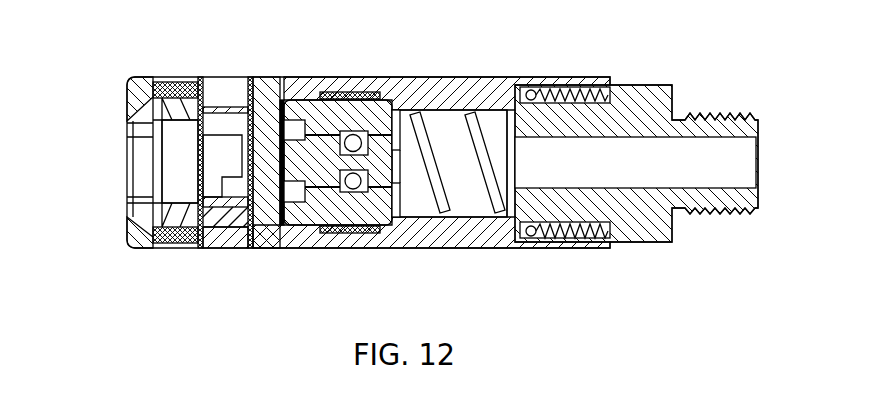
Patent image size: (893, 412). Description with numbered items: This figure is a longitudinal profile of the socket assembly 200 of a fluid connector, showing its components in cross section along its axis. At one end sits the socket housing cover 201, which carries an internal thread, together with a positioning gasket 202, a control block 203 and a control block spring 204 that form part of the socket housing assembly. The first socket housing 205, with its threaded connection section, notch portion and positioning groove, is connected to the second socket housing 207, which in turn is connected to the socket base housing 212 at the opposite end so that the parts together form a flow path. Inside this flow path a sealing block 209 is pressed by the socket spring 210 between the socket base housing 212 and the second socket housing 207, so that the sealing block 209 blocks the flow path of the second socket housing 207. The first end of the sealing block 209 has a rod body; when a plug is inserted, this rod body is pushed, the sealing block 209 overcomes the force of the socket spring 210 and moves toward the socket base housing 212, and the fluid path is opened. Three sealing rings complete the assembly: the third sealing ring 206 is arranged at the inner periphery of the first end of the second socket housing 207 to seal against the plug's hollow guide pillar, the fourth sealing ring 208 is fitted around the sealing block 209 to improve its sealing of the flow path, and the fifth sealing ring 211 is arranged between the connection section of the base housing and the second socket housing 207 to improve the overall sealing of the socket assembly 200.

The socket assembly 200 is at (108, 28).
The socket housing cover 201 is at (135, 98).
The positioning gasket 202 is at (178, 100).
The control block 203 is at (223, 93).
The control block spring 204 is at (218, 246).
The first socket housing 205 is at (267, 100).
The third sealing ring 206 is at (308, 246).
The second socket housing 207 is at (433, 80).
The fourth sealing ring 208 is at (375, 246).
The sealing block 209 is at (353, 80).
The socket spring 210 is at (480, 80).
The fifth sealing ring 211 is at (538, 246).
The socket base housing 212 is at (633, 80).